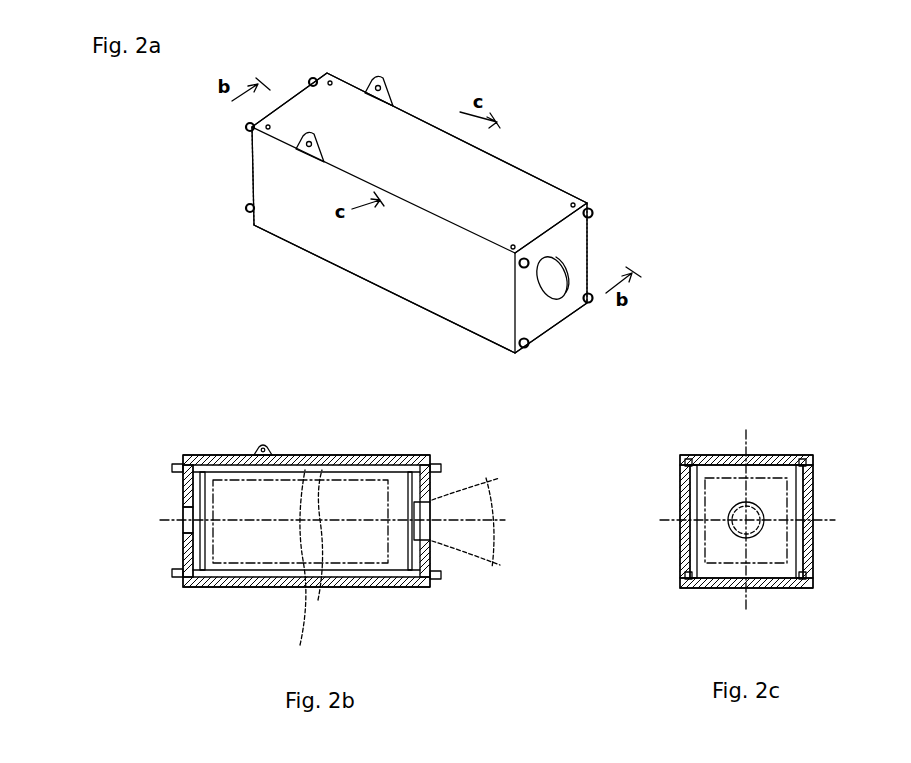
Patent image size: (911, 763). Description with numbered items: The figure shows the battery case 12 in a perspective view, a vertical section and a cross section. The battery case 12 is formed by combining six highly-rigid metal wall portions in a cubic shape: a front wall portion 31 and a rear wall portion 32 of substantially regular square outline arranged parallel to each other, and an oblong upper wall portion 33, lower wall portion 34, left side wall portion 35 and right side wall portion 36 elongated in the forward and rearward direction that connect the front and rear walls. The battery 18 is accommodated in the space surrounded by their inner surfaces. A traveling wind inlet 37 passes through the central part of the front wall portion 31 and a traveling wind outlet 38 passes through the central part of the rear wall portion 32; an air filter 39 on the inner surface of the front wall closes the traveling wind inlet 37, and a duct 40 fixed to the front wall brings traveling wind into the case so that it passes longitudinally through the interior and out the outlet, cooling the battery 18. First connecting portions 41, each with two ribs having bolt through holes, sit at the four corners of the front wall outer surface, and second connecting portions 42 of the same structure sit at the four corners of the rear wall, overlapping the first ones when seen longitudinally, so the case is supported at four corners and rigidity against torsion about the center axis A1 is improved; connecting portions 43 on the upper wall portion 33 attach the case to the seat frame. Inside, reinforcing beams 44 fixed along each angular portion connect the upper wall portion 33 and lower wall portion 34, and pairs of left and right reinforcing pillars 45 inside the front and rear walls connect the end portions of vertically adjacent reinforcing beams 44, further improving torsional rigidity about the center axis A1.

In FIG. 2A, the battery case 12 is at (634, 118).
In FIG. 2B, the battery case 12 is at (157, 401).
In FIG. 2C, the battery case 12 is at (851, 401).
In FIG. 2B, the battery 18 is at (305, 570).
In FIG. 2C, the battery 18 is at (746, 478).
In FIG. 2A, the front wall portion 31 is at (545, 313).
In FIG. 2B, the front wall portion 31 is at (425, 580).
In FIG. 2C, the front wall portion 31 is at (813, 561).
In FIG. 2B, the rear wall portion 32 is at (184, 582).
In FIG. 2A, the upper wall portion 33 is at (510, 182).
In FIG. 2B, the upper wall portion 33 is at (330, 456).
In FIG. 2C, the upper wall portion 33 is at (788, 460).
In FIG. 2B, the lower wall portion 34 is at (335, 590).
In FIG. 2C, the lower wall portion 34 is at (754, 590).
In FIG. 2A, the left side wall portion 35 is at (396, 270).
In FIG. 2C, the left side wall portion 35 is at (680, 489).
In FIG. 2B, the right side wall portion 36 is at (238, 556).
In FIG. 2C, the right side wall portion 36 is at (818, 469).
In FIG. 2A, the traveling wind inlet 37 is at (565, 294).
In FIG. 2B, the traveling wind inlet 37 is at (416, 523).
In FIG. 2C, the traveling wind inlet 37 is at (730, 521).
In FIG. 2B, the traveling wind outlet 38 is at (183, 506).
In FIG. 2B, the air filter 39 is at (388, 496).
In FIG. 2C, the air filter 39 is at (705, 561).
In FIG. 2B, the duct 40 is at (482, 567).
In FIG. 2A, the first connecting portions 41 is at (598, 219).
In FIG. 2B, the first connecting portions 41 is at (443, 467).
In FIG. 2A, the second connecting portions 42 is at (309, 77).
In FIG. 2B, the second connecting portions 42 is at (175, 462).
In FIG. 2A, the connecting portions 43 is at (318, 137).
In FIG. 2B, the connecting portions 43 is at (266, 445).
In FIG. 2B, the reinforcing beams 44 is at (300, 470).
In FIG. 2C, the reinforcing beams 44 is at (688, 460).
In FIG. 2B, the reinforcing pillars 45 is at (206, 470).
In FIG. 2C, the reinforcing pillars 45 is at (696, 465).
In FIG. 2B, the center axis A1 is at (327, 548).